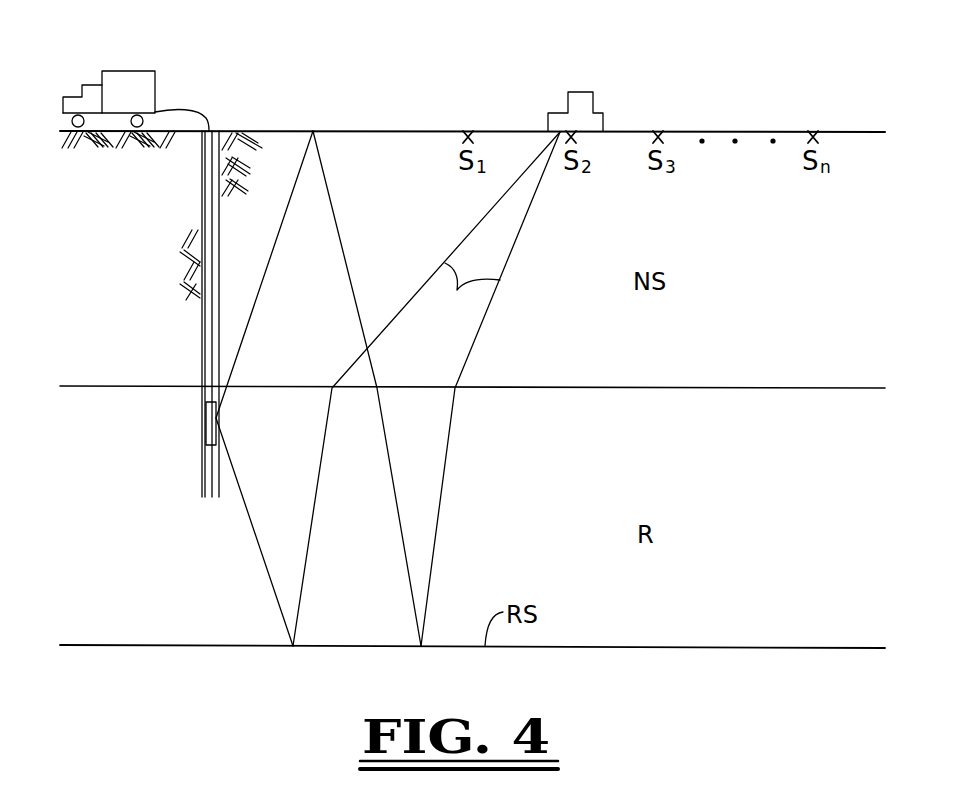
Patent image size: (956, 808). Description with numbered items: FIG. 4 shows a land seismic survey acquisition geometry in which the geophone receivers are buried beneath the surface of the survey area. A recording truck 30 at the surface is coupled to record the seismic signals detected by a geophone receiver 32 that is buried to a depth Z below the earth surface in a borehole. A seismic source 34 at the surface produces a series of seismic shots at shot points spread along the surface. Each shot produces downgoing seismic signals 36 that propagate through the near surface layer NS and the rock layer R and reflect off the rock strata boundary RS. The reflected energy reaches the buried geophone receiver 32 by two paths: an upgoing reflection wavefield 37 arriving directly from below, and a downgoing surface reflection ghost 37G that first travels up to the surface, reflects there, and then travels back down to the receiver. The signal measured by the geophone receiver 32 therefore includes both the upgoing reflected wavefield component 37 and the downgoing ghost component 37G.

The recording truck 30 is at (143, 70).
The geophone receiver 32 is at (205, 431).
The seismic source 34 is at (585, 92).
The downgoing seismic signals 36 is at (468, 290).
The upgoing reflection wavefield 37 is at (261, 556).
The downgoing surface reflection ghost 37G is at (257, 297).